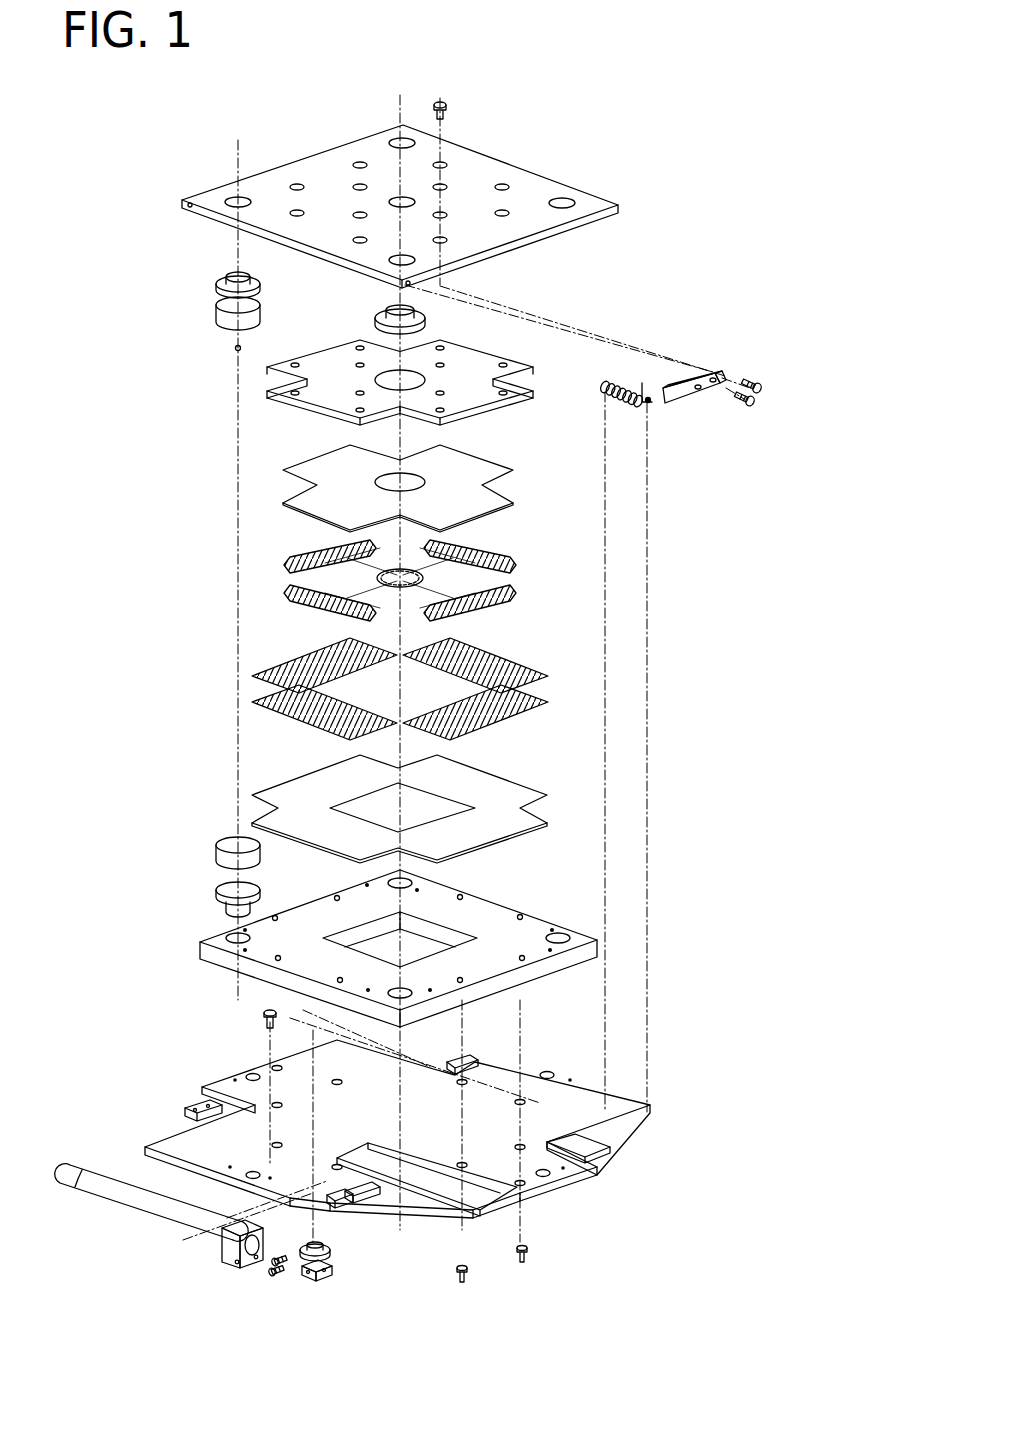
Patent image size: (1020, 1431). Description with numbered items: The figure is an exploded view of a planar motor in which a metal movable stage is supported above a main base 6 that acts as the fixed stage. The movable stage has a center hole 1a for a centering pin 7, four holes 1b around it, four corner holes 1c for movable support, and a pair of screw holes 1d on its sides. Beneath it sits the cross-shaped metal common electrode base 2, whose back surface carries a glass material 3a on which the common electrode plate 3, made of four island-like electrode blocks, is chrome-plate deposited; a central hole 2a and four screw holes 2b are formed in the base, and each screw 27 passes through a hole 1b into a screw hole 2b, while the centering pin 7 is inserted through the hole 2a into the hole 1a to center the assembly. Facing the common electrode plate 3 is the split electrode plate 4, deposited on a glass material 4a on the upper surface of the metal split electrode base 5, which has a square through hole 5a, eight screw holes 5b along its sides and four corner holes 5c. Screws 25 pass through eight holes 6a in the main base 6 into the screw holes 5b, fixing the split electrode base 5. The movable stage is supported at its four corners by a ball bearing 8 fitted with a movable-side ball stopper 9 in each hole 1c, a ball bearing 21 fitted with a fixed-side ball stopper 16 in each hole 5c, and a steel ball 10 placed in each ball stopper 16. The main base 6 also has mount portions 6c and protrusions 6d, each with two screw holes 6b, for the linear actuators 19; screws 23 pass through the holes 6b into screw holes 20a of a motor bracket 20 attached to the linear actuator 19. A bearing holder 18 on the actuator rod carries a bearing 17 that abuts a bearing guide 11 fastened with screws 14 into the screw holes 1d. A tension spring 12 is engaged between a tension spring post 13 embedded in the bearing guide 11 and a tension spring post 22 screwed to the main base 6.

The center hole 1a is at (402, 198).
The holes 1b is at (358, 213).
The holes 1c is at (398, 140).
The screw holes 1d is at (186, 207).
The common electrode base 2 is at (417, 369).
The hole 2a is at (392, 373).
The screw holes 2b is at (356, 392).
The common electrode plate 3 is at (521, 545).
The glass material 3a is at (496, 470).
The split electrode plate 4 is at (536, 665).
The glass material 4a is at (512, 795).
The split electrode base 5 is at (428, 938).
The square through hole 5a is at (432, 926).
The screw holes 5b is at (335, 895).
The holes 5c is at (387, 882).
The main base 6 is at (404, 1118).
The holes 6a is at (282, 1143).
The screw holes 6b is at (192, 1118).
The mount portions 6c is at (172, 1143).
The protrusions 6d is at (332, 1205).
The centering pin 7 is at (426, 319).
The ball bearing 8 is at (224, 282).
The ball stopper 9 is at (226, 311).
The steel ball 10 is at (234, 349).
The bearing guide 11 is at (690, 392).
The tension spring 12 is at (622, 388).
The tension spring post 13 is at (652, 403).
The screws 14 is at (762, 393).
The ball stopper 16 is at (222, 843).
The bearing 17 is at (331, 1250).
The bearing holder 18 is at (322, 1278).
The linear actuator 19 is at (150, 1210).
The motor bracket 20 is at (223, 1275).
The screw holes 20a is at (257, 1260).
The ball bearing 21 is at (220, 888).
The tension spring post 22 is at (262, 1020).
The screws 23 is at (285, 1268).
The screws 25 is at (466, 1275).
The screw 27 is at (446, 104).